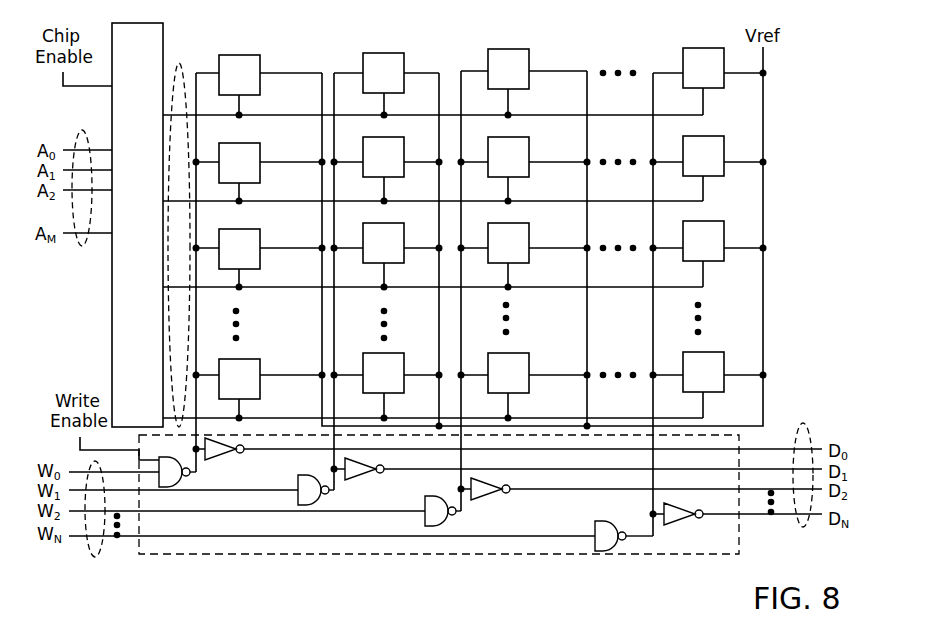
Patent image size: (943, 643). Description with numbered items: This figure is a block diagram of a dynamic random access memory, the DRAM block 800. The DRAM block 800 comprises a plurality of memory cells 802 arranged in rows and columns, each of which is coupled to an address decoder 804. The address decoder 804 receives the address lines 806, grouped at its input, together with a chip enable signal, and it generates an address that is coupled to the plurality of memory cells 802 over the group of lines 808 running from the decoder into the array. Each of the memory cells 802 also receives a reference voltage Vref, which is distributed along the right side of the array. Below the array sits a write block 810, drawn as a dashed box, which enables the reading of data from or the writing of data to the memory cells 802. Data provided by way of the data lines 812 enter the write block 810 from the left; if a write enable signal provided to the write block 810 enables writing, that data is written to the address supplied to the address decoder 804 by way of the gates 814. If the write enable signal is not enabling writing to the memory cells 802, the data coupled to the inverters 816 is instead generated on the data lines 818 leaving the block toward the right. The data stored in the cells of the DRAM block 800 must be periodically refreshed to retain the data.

The DRAM block 800 is at (788, 70).
The memory cells 802 is at (478, 219).
The address decoder 804 is at (112, 312).
The address lines 806 is at (83, 246).
The word lines 808 is at (177, 100).
The write block 810 is at (222, 555).
The data lines 812 is at (88, 553).
The gates 814 is at (398, 495).
The inverters 816 is at (508, 498).
The data lines 818 is at (800, 421).